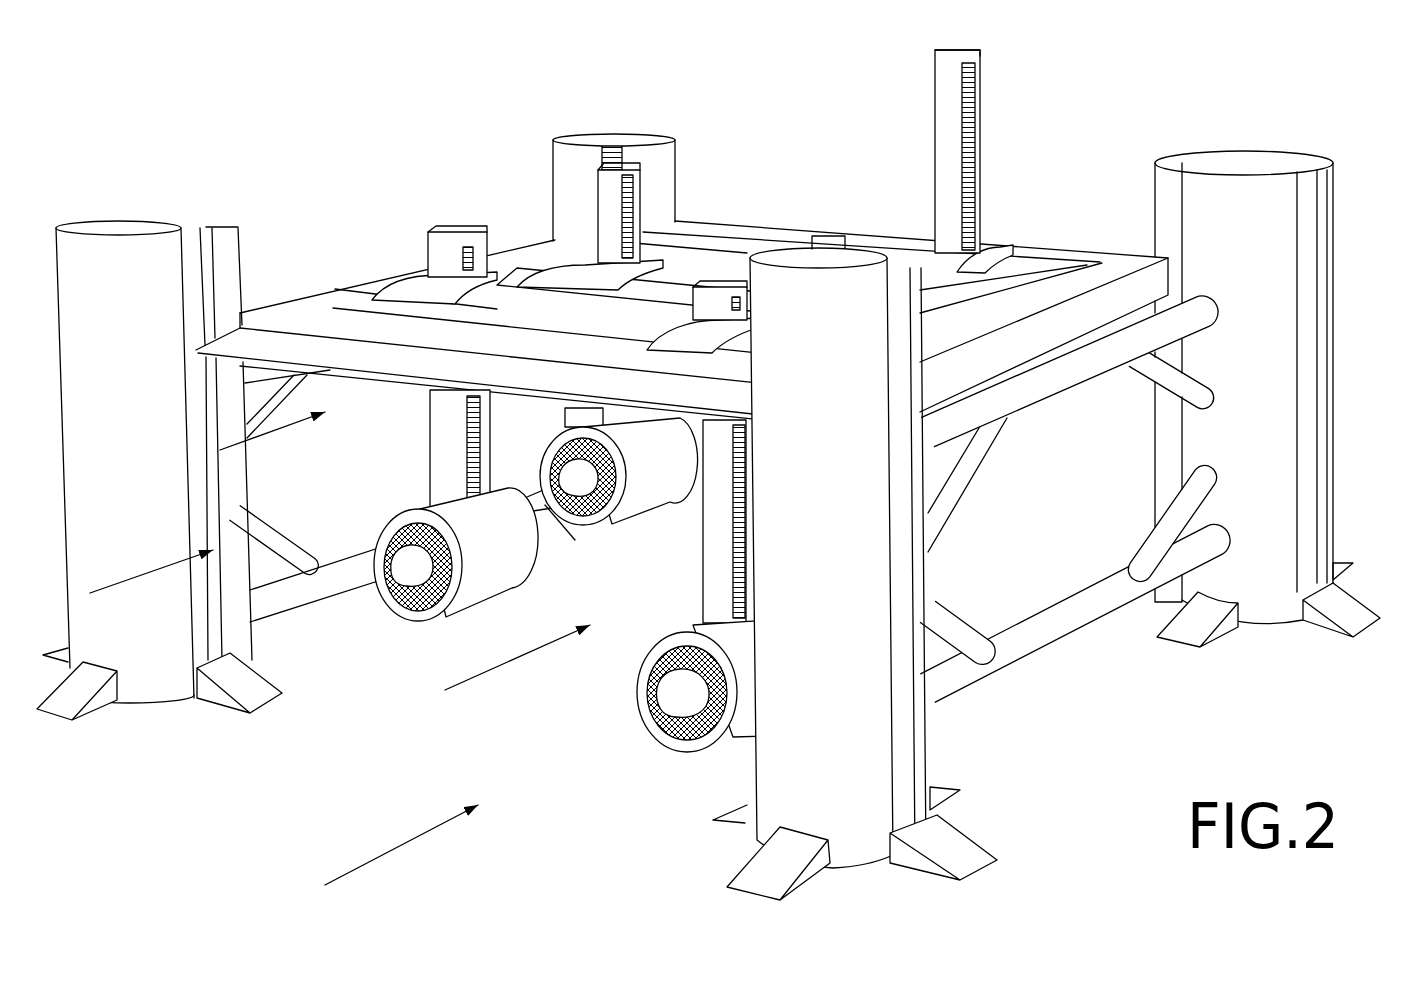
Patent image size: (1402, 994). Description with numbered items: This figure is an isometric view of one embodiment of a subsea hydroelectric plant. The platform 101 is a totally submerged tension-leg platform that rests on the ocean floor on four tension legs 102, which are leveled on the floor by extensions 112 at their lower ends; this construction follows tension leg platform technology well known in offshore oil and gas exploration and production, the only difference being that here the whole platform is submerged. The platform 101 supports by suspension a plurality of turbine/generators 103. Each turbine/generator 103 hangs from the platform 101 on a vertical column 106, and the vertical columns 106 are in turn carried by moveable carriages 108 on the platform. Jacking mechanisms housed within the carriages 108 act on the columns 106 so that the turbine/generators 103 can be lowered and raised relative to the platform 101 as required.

The platform 101 is at (298, 306).
The tension legs 102 is at (130, 226).
The turbine/generators 103 is at (412, 610).
The vertical columns 106 is at (462, 227).
The moveable carriages 108 is at (418, 285).
The extensions 112 is at (213, 693).